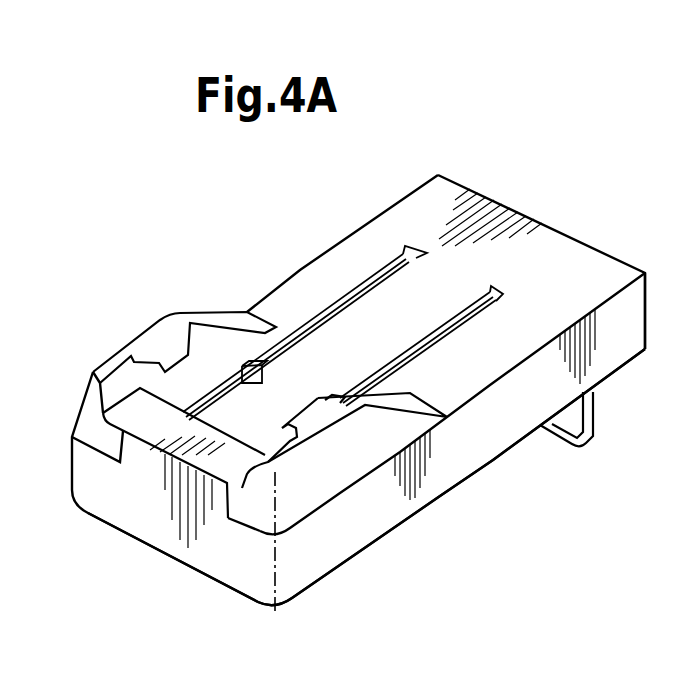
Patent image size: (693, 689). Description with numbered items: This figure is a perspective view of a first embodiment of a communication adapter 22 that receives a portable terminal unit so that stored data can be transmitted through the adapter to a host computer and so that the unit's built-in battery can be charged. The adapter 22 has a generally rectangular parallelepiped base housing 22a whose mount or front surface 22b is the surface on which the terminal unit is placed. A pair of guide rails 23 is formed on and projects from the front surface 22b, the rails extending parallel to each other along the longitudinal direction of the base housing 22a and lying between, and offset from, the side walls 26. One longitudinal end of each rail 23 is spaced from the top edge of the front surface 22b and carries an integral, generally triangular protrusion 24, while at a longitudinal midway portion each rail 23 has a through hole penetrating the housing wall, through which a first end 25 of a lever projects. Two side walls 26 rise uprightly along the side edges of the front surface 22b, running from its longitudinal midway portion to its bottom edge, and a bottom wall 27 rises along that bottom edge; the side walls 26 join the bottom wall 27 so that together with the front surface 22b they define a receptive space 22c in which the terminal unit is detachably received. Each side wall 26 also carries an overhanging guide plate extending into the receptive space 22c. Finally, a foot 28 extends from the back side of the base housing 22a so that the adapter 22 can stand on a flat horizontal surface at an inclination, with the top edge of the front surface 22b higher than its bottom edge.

The adapter 22 is at (341, 214).
The base housing 22a is at (524, 217).
The front surface 22b is at (447, 205).
The receptive space 22c is at (260, 416).
The guide rails 23 is at (343, 298).
The triangular protrusion 24 is at (412, 250).
The first end of lever 25 is at (263, 375).
The side walls 26 is at (150, 330).
The bottom wall 27 is at (158, 486).
The foot 28 is at (592, 425).